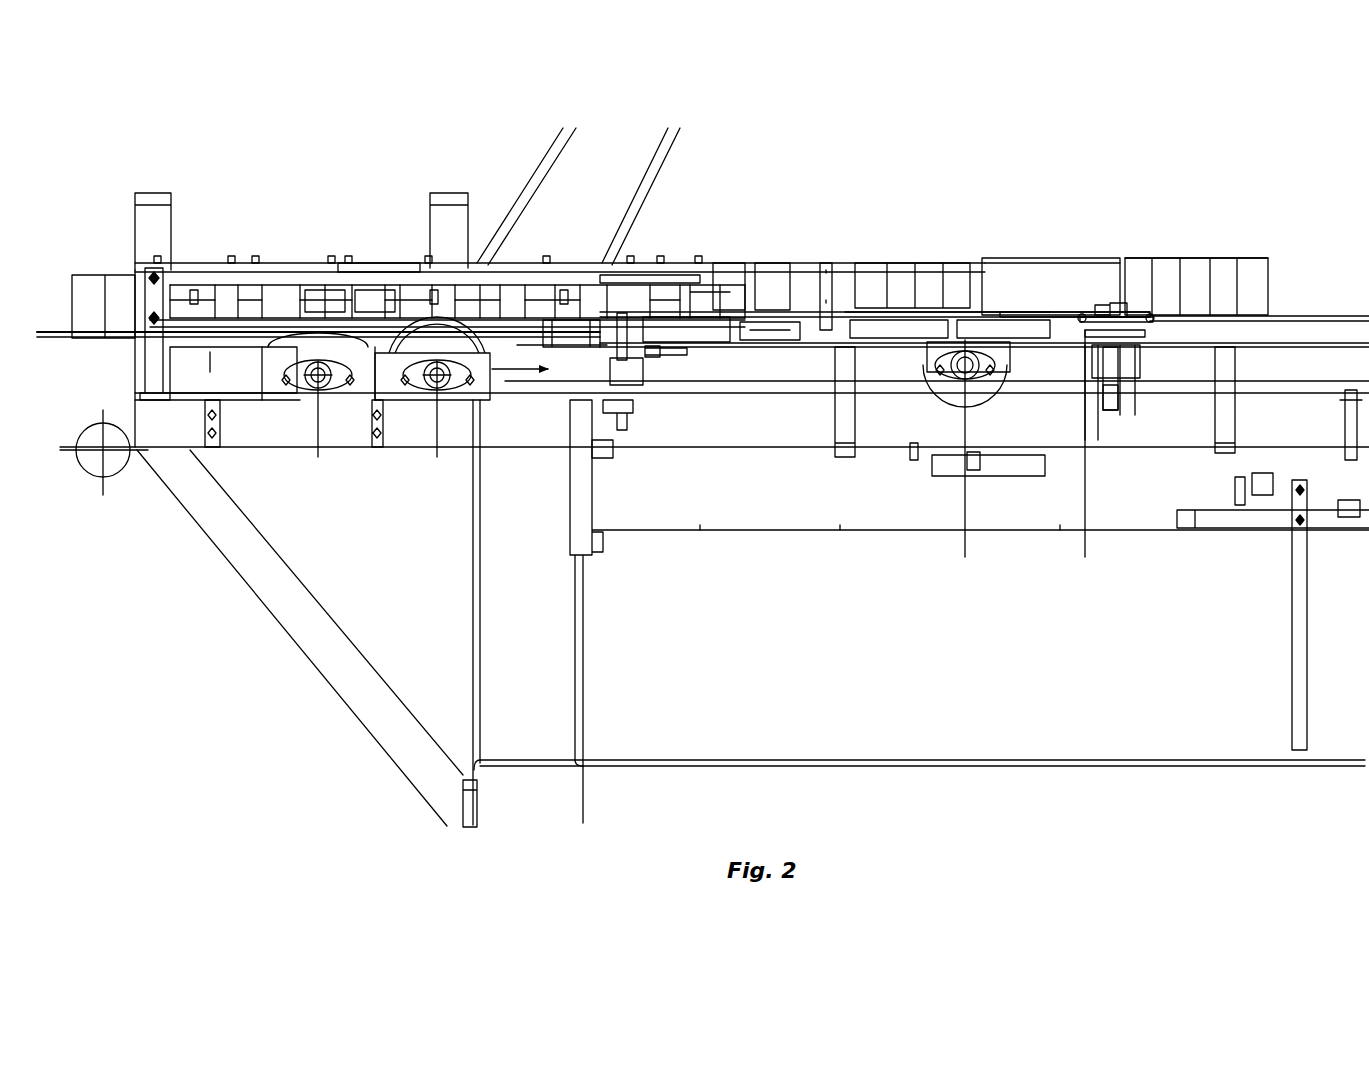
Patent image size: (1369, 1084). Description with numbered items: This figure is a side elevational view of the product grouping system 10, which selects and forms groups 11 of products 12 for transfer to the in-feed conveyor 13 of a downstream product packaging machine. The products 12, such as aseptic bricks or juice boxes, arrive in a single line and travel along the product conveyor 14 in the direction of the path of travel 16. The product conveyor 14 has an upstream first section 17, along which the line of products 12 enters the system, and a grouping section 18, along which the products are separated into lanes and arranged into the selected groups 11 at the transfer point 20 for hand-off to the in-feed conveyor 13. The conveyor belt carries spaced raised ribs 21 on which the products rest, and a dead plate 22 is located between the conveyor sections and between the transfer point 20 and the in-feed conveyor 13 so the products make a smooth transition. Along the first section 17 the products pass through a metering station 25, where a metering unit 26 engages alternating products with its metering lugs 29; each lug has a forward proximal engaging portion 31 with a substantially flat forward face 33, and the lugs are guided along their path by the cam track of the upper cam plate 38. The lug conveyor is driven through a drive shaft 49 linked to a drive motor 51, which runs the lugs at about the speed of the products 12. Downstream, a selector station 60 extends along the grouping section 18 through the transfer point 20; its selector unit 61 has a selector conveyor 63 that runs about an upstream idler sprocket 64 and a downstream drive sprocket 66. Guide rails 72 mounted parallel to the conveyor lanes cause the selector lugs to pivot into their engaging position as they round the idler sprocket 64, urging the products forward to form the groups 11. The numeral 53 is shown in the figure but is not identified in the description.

The product grouping system 10 is at (491, 168).
The groups of products 11 is at (1176, 254).
The products 12 is at (92, 285).
The in-feed conveyor 13 is at (1303, 316).
The product conveyor 14 is at (79, 341).
The path of travel 16 is at (515, 374).
The first section 17 is at (118, 337).
The grouping section 18 is at (870, 327).
The transfer point 20 is at (1118, 300).
The raised ribs 21 is at (60, 330).
The dead plate 22 is at (366, 352).
The metering station 25 is at (355, 245).
The metering unit 26 is at (252, 372).
The metering lugs 29 is at (300, 282).
The forward proximal engaging portion 31 is at (324, 285).
The forward face 33 is at (369, 288).
The upper cam plate 38 is at (629, 277).
The drive shaft 49 is at (662, 352).
The drive motor 51 is at (636, 380).
The carrier block 53 is at (801, 268).
The selector station 60 is at (976, 245).
The selector unit 61 is at (774, 346).
The selector conveyor 63 is at (1072, 338).
The upstream idler sprocket 64 is at (557, 349).
The downstream drive sprocket 66 is at (1126, 347).
The guide rails 72 is at (1034, 307).